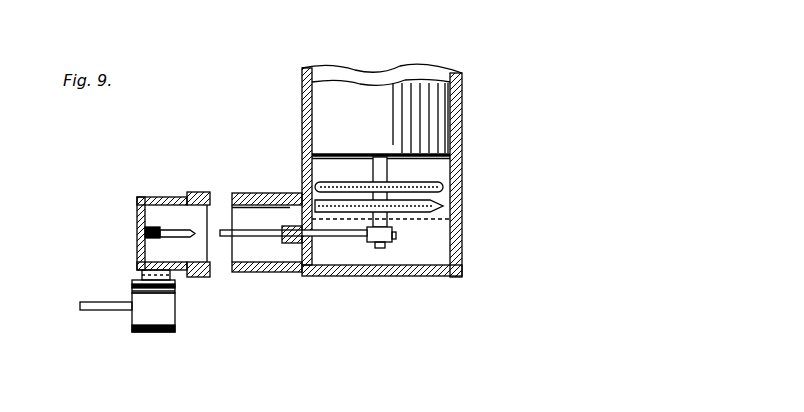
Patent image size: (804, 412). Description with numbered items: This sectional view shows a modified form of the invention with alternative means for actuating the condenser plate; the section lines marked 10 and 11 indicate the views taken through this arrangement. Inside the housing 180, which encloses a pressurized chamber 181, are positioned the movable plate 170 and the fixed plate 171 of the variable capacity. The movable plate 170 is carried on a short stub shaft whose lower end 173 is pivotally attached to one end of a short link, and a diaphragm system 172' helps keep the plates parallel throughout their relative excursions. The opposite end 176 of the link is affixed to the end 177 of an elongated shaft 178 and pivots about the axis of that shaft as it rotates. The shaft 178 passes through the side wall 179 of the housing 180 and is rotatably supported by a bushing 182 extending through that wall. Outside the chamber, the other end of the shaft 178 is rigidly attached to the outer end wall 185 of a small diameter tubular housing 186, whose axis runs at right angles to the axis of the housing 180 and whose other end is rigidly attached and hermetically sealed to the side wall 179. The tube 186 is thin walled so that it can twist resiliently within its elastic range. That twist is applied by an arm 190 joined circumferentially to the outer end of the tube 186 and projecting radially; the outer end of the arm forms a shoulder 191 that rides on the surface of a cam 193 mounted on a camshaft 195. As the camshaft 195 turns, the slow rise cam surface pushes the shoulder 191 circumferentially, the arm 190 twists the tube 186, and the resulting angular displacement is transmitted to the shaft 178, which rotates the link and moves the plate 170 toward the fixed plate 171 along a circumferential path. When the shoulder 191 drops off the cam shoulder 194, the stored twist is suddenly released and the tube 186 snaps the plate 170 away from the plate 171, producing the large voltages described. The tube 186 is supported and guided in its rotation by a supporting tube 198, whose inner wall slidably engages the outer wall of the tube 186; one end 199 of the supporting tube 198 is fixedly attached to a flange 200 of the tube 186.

The housing 180 is at (286, 102).
The pressurized chamber 181 is at (438, 257).
The fixed plate 171 is at (440, 185).
The movable plate 170 is at (445, 205).
The diaphragm system 172' is at (409, 220).
The lower end of stub shaft 173 is at (378, 246).
The opposite end of link 176 is at (384, 248).
The end of elongated shaft 177 is at (360, 238).
The elongated shaft 178 is at (335, 238).
The side wall 179 is at (290, 207).
The bushing 182 is at (283, 240).
The outer end wall 185 is at (148, 245).
The tubular housing 186 is at (233, 273).
The arm 190 is at (157, 196).
The shoulder 191 is at (143, 272).
The cam 193 is at (153, 315).
The cam shoulder 194 is at (135, 287).
The camshaft 195 is at (82, 308).
The supporting tube 198 is at (247, 193).
The end of supporting tube 199 is at (255, 273).
The flange 200 is at (293, 273).
The section line 10 is at (442, 168).
The section line 11 is at (93, 261).